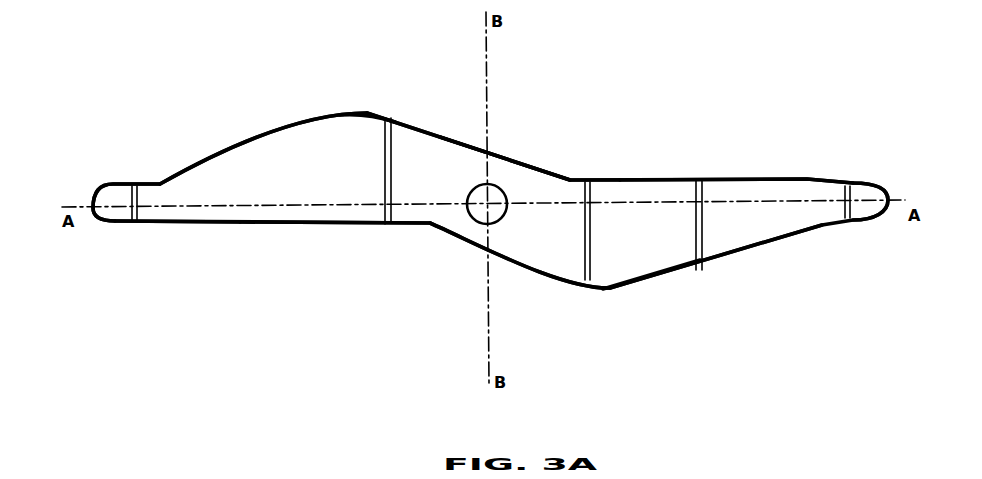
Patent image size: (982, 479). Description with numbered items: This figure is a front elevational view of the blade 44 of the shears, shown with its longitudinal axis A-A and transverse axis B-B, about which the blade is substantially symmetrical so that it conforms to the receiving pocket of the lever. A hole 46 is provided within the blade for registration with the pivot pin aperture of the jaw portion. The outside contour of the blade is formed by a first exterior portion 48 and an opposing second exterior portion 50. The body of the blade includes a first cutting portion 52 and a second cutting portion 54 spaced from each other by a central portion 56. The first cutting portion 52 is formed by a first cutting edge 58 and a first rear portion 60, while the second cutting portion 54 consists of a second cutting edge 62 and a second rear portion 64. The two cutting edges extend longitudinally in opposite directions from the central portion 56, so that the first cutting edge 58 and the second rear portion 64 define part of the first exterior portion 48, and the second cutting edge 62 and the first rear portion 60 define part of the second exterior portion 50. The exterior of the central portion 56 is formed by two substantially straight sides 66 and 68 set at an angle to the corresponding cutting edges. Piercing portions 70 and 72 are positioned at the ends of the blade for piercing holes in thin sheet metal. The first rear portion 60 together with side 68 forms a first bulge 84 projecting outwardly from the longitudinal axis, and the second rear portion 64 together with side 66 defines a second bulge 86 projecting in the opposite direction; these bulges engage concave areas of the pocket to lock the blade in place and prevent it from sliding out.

The blade 44 is at (632, 192).
The hole 46 is at (496, 198).
The first exterior portion 48 is at (168, 222).
The second exterior portion 50 is at (457, 141).
The first cutting portion 52 is at (263, 196).
The second cutting portion 54 is at (730, 237).
The central portion 56 is at (473, 168).
The first cutting edge 58 is at (312, 228).
The first rear portion 60 is at (289, 135).
The second cutting edge 62 is at (760, 180).
The second rear portion 64 is at (653, 273).
The side of central portion 66 is at (530, 272).
The side of central portion 68 is at (400, 117).
The piercing portion 70 is at (100, 212).
The piercing portion 72 is at (873, 210).
The first bulge 84 is at (356, 132).
The second bulge 86 is at (620, 268).